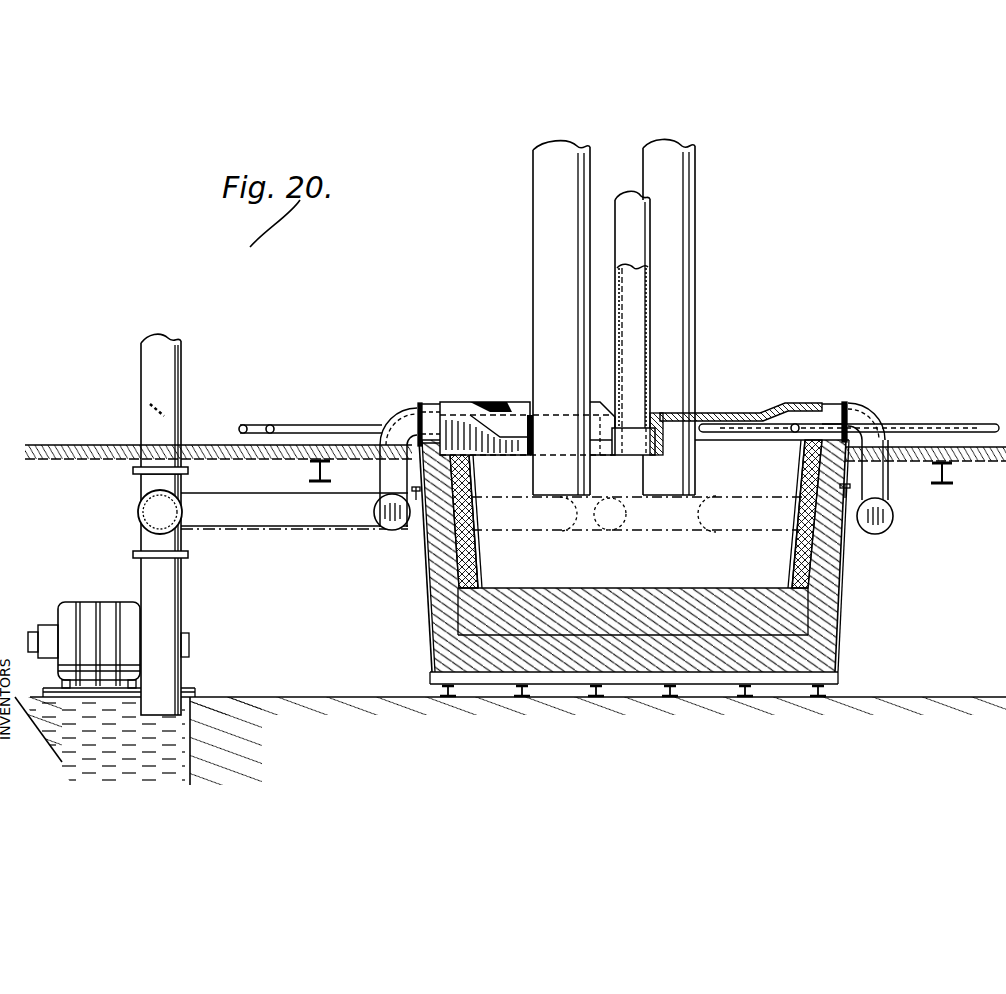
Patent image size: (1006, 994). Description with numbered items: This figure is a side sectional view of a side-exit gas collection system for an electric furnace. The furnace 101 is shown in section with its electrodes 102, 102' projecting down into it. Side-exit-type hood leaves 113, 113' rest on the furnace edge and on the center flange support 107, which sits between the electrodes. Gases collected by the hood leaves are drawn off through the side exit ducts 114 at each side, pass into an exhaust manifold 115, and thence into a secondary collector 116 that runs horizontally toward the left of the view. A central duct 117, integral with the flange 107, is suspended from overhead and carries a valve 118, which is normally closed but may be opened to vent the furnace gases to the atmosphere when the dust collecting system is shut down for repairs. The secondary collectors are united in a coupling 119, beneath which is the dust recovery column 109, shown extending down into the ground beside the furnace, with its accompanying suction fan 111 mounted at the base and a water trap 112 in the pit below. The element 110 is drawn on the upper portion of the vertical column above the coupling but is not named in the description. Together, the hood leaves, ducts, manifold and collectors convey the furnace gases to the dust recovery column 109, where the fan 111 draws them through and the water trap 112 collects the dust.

The furnace 101 is at (845, 607).
The electrode 102 is at (698, 317).
The electrode 102' is at (530, 318).
The center flange support 107 is at (620, 452).
The dust recovery column 109 is at (182, 594).
The vertical pipe 110 is at (167, 420).
The suction fan 111 is at (90, 602).
The water trap 112 is at (100, 739).
The side-exit-type hood leaf 113 is at (527, 413).
The side-exit-type hood leaf 113' is at (741, 392).
The side exit duct 114 is at (418, 402).
The exhaust manifold 115 is at (894, 524).
The secondary collector 116 is at (336, 530).
The central duct 117 is at (652, 341).
The valve 118 is at (622, 286).
The coupling 119 is at (138, 506).